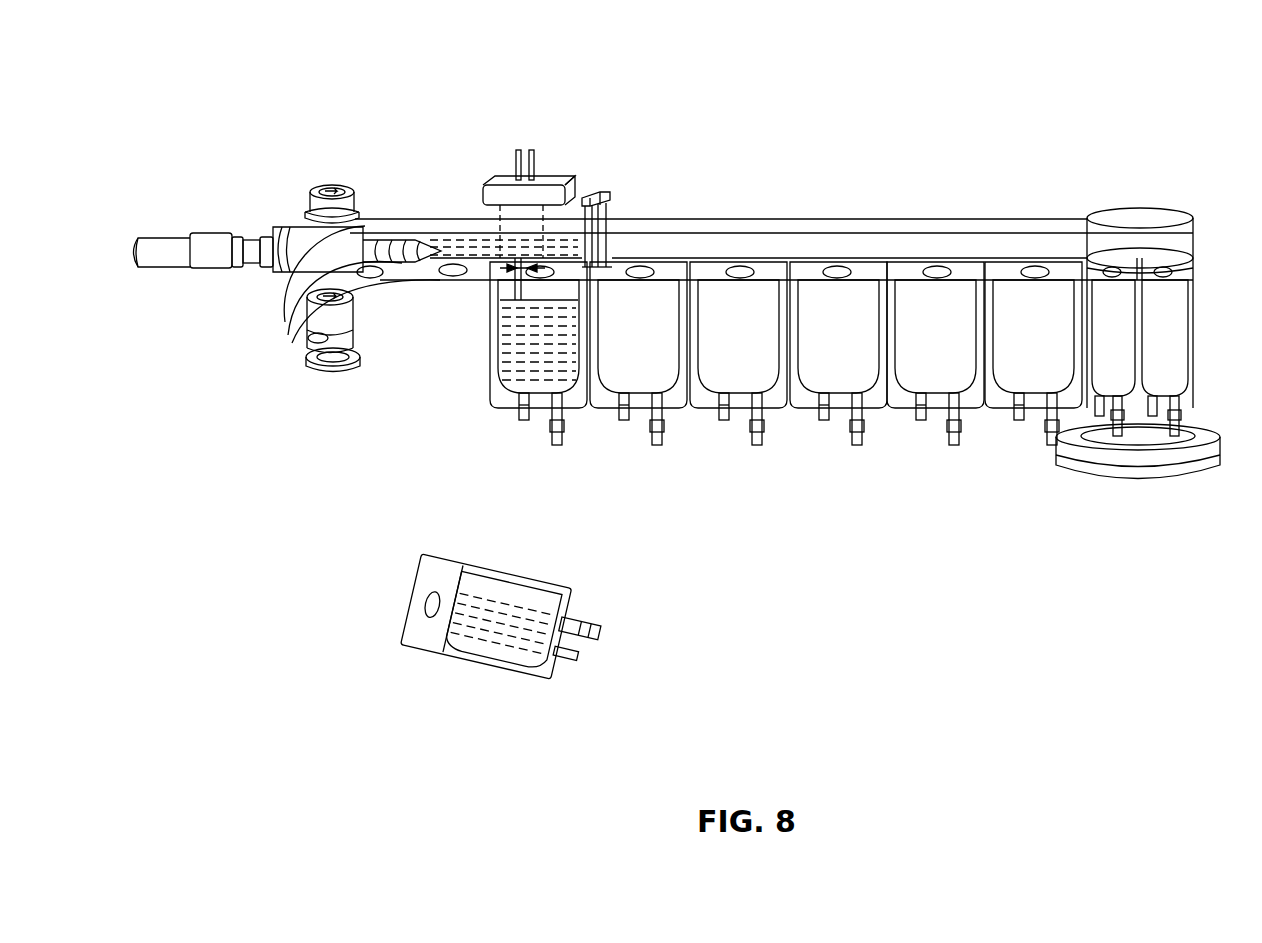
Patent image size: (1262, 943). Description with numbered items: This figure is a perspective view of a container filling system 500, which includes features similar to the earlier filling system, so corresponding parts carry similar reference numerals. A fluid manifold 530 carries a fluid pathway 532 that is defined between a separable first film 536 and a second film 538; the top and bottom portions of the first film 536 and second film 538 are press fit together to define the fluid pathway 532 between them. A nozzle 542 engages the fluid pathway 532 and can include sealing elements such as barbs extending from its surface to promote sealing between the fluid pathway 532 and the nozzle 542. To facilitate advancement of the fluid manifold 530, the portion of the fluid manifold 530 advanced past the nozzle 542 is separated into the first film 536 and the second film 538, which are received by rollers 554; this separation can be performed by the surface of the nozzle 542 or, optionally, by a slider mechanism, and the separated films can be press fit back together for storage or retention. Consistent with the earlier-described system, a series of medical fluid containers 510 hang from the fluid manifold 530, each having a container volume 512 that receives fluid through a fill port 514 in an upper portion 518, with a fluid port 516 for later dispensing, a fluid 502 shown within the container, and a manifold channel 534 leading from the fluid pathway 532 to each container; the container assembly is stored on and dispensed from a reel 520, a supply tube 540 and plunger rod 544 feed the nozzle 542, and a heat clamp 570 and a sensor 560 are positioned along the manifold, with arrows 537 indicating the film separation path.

The container filling system 500 is at (1084, 76).
The fluid 502 is at (457, 268).
The bag assembly 510 is at (568, 408).
The bag 512 is at (505, 364).
The port connection 514 is at (523, 280).
The outlet nozzle 516 is at (553, 432).
The inlet pipe 518 is at (500, 287).
The container 520 is at (1168, 216).
The fluid manifold 530 is at (848, 218).
The fluid pathway 532 is at (562, 245).
The valve 534 is at (519, 266).
The first film 536 is at (291, 330).
The flow path 537 is at (292, 320).
The second film 538 is at (356, 228).
The supply tube 540 is at (172, 242).
The nozzle 542 is at (293, 232).
The plunger rod 544 is at (410, 247).
The rollers 554 is at (327, 190).
The sensor 560 is at (544, 180).
The clamp 570 is at (616, 214).